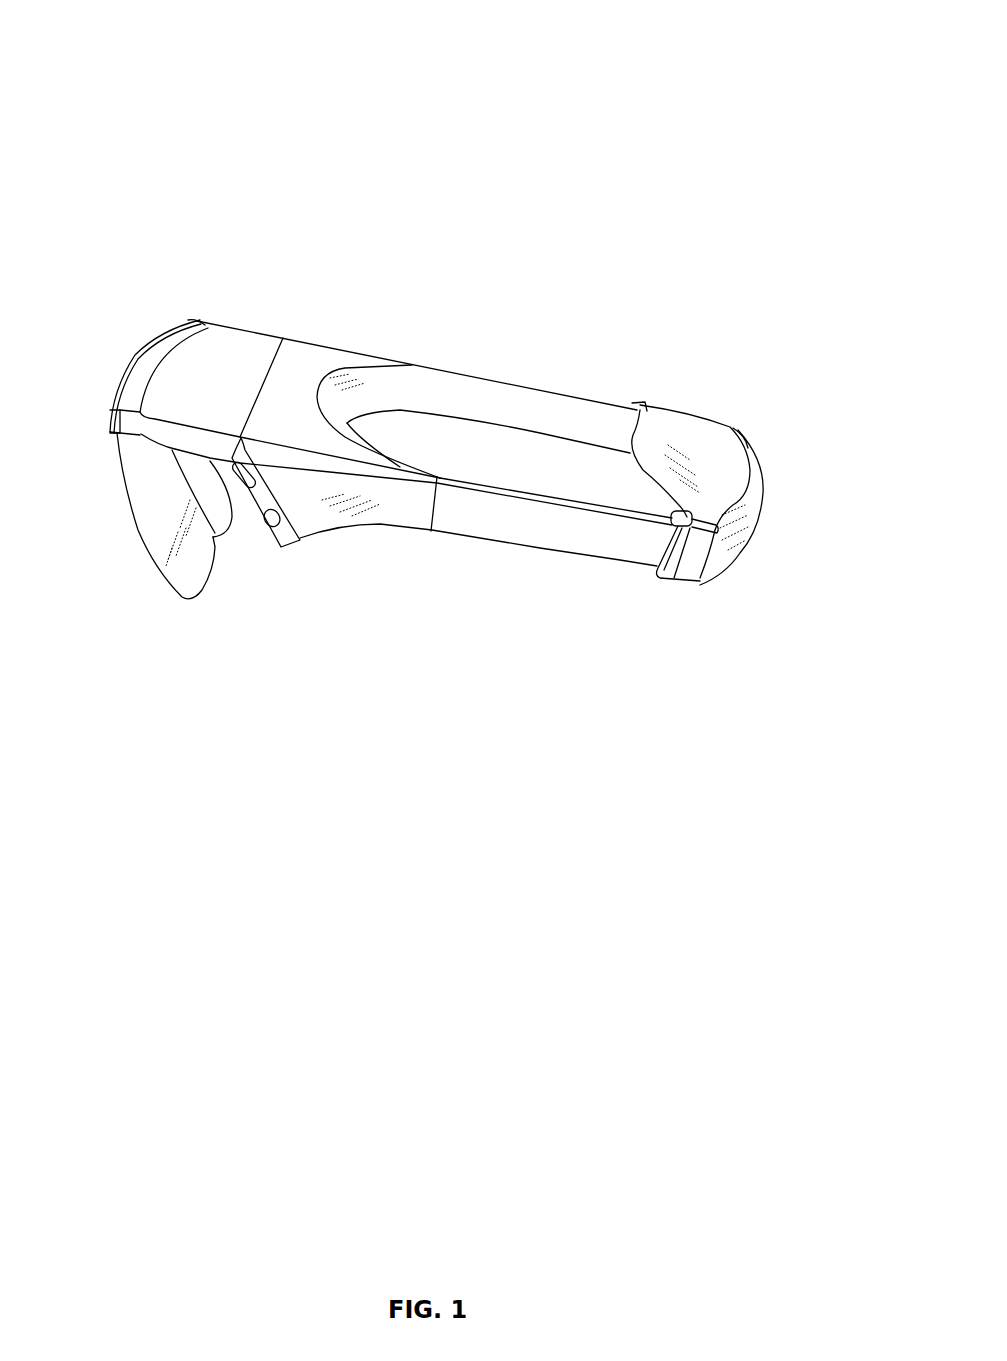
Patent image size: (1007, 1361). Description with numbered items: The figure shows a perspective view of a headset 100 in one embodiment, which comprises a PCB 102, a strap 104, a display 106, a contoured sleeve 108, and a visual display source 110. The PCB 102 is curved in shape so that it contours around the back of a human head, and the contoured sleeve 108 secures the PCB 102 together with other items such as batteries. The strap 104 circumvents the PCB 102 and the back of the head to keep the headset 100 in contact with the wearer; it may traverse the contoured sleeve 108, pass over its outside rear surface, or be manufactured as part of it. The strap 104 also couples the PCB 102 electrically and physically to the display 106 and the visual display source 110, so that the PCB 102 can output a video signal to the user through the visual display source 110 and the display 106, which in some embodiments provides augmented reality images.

The headset 100 is at (770, 55).
The PCB 102 is at (765, 510).
The strap 104 is at (562, 530).
The display 106 is at (124, 513).
The contoured sleeve 108 is at (747, 432).
The visual display source 110 is at (300, 541).